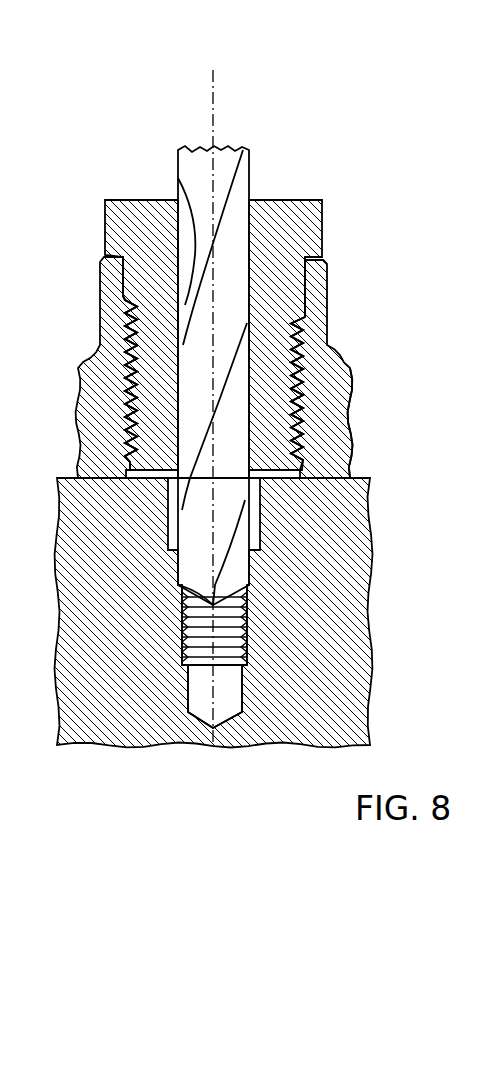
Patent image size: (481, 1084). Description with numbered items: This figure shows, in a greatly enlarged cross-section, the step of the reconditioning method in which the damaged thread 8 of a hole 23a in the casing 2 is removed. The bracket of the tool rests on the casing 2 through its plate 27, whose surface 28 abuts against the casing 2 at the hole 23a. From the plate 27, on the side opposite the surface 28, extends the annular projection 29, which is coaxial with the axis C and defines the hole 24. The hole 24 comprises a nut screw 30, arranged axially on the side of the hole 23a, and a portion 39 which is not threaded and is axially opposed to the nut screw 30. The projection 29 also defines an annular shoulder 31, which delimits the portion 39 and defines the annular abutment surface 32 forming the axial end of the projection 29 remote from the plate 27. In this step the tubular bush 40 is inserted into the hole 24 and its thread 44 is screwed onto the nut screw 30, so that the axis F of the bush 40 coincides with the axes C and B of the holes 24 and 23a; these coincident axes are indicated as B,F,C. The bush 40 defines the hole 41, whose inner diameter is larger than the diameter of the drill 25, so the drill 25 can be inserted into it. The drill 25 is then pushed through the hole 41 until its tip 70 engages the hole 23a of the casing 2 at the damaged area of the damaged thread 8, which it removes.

The casing 2 is at (340, 705).
The damaged thread 8 is at (194, 642).
The hole 23a is at (250, 692).
The hole 24 is at (134, 270).
The drill 25 is at (236, 200).
The plate 27 is at (332, 422).
The surface 28 is at (90, 482).
The annular projection 29 is at (318, 318).
The nut screw 30 is at (139, 377).
The annular shoulder 31 is at (318, 262).
The annular abutment surface 32 is at (114, 245).
The portion 39 is at (302, 285).
The bush 40 is at (282, 230).
The hole 41 is at (183, 262).
The thread 44 is at (305, 410).
The tip 70 is at (222, 590).
The axes B,F,C is at (213, 92).